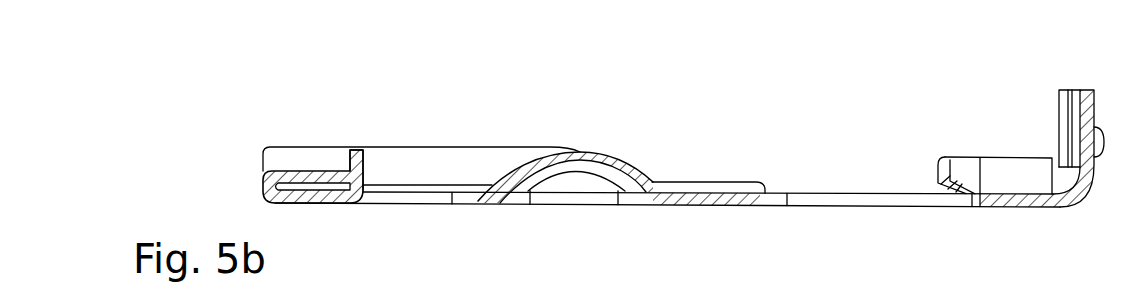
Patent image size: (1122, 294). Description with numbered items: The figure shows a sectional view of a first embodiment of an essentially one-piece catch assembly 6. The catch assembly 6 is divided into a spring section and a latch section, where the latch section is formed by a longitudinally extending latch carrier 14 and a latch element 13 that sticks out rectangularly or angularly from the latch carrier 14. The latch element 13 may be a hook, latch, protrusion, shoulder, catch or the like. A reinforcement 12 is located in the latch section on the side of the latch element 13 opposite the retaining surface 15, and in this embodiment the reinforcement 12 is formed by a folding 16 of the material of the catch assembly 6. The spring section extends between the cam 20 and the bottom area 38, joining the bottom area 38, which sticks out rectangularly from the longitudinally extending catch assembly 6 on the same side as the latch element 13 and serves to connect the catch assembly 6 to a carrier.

The catch assembly 6 is at (714, 128).
The reinforcement 12 is at (310, 158).
The latch element 13 is at (352, 148).
The latch carrier 14 is at (412, 198).
The retaining surface 15 is at (367, 172).
The folding 16 is at (266, 176).
The cam 20 is at (612, 155).
The bottom area 38 is at (1083, 115).